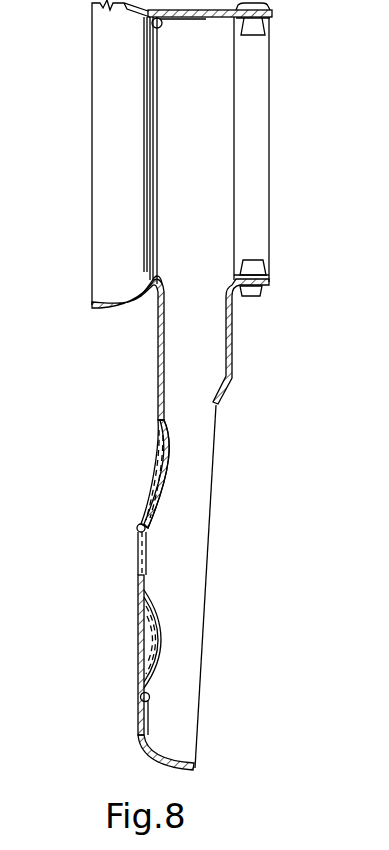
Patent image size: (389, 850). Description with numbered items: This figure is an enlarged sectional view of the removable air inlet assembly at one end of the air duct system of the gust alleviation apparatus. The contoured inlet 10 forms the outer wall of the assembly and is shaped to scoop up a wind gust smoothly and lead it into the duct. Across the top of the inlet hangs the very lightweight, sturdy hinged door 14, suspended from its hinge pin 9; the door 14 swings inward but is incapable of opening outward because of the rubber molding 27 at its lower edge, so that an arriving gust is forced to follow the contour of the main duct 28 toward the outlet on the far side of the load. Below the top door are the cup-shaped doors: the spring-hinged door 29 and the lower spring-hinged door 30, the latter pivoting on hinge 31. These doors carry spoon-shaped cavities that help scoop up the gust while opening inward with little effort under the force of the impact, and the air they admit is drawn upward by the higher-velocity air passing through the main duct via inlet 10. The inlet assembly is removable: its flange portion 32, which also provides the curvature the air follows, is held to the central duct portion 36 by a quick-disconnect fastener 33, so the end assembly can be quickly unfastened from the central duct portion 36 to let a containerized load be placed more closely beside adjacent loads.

The hinge pin 9 is at (172, 18).
The inlet 10 is at (92, 139).
The hinged door 14 is at (147, 101).
The rubber molding 27 is at (148, 270).
The main duct 28 is at (157, 358).
The spring-hinged door 29 is at (148, 480).
The spring-hinged door 30 is at (138, 633).
The hinge 31 is at (150, 698).
The flange portion 32 is at (256, 297).
The quick-disconnect fastener 33 is at (252, 260).
The central duct portion 36 is at (264, 32).